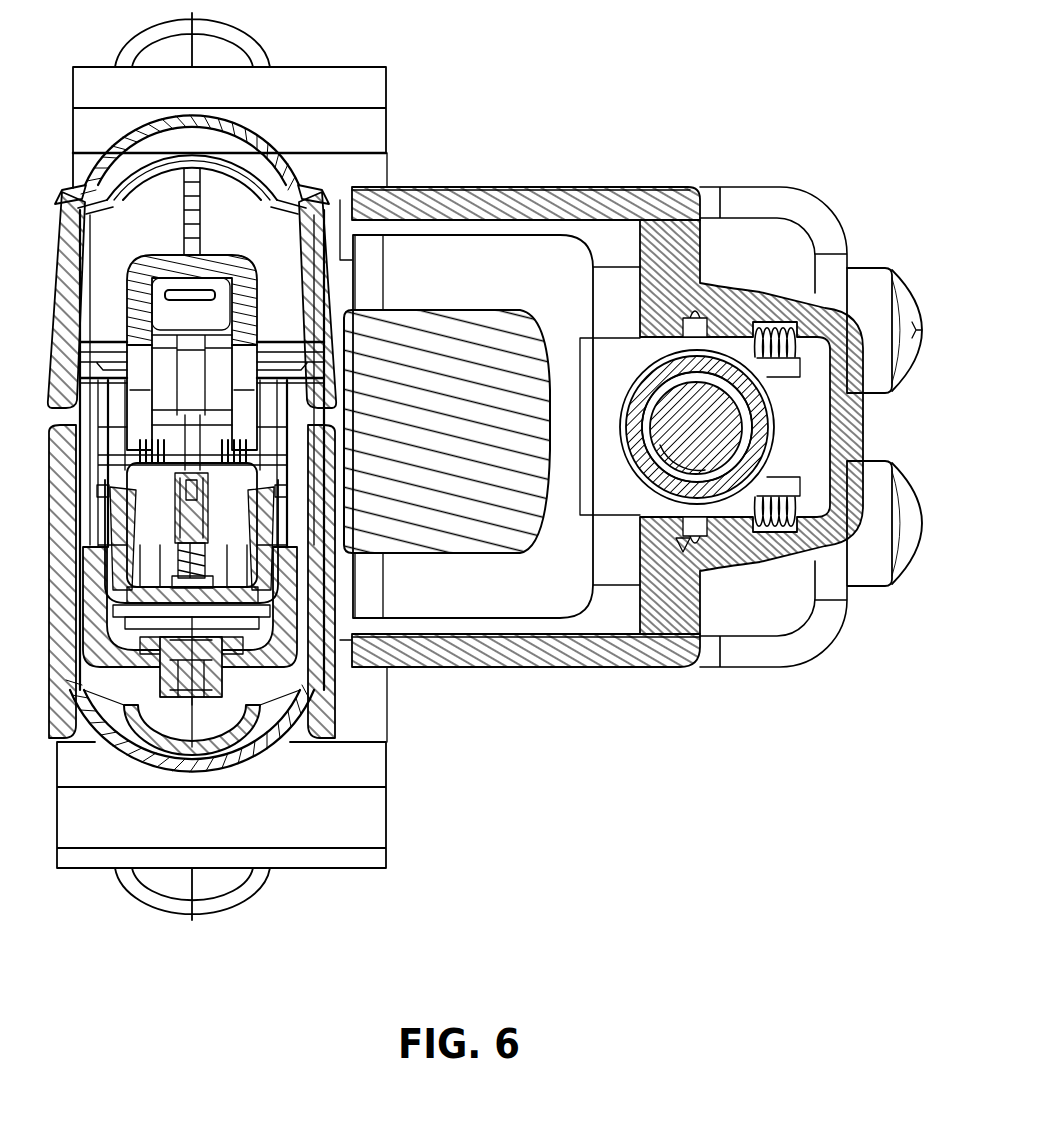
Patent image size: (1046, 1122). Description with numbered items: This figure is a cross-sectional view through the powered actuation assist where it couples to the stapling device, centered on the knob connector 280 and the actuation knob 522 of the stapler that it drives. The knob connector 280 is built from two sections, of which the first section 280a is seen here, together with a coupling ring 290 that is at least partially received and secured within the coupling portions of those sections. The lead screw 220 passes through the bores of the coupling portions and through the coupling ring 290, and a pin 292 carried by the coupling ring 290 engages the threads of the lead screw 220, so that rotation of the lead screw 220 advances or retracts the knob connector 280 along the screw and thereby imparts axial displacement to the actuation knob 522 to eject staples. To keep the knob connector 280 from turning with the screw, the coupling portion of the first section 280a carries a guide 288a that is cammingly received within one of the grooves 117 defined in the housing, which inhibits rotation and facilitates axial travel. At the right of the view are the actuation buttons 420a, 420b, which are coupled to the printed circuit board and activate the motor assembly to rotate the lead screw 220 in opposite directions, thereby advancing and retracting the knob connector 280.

The grooves 117 is at (683, 545).
The lead screw 220 is at (697, 393).
The knob connector 280 is at (607, 476).
The first section 280a is at (560, 258).
The guide 288a is at (710, 540).
The coupling ring 290 is at (753, 427).
The pin 292 is at (640, 400).
The actuation button 420a is at (903, 283).
The actuation button 420b is at (910, 563).
The actuation knob 522 is at (433, 338).